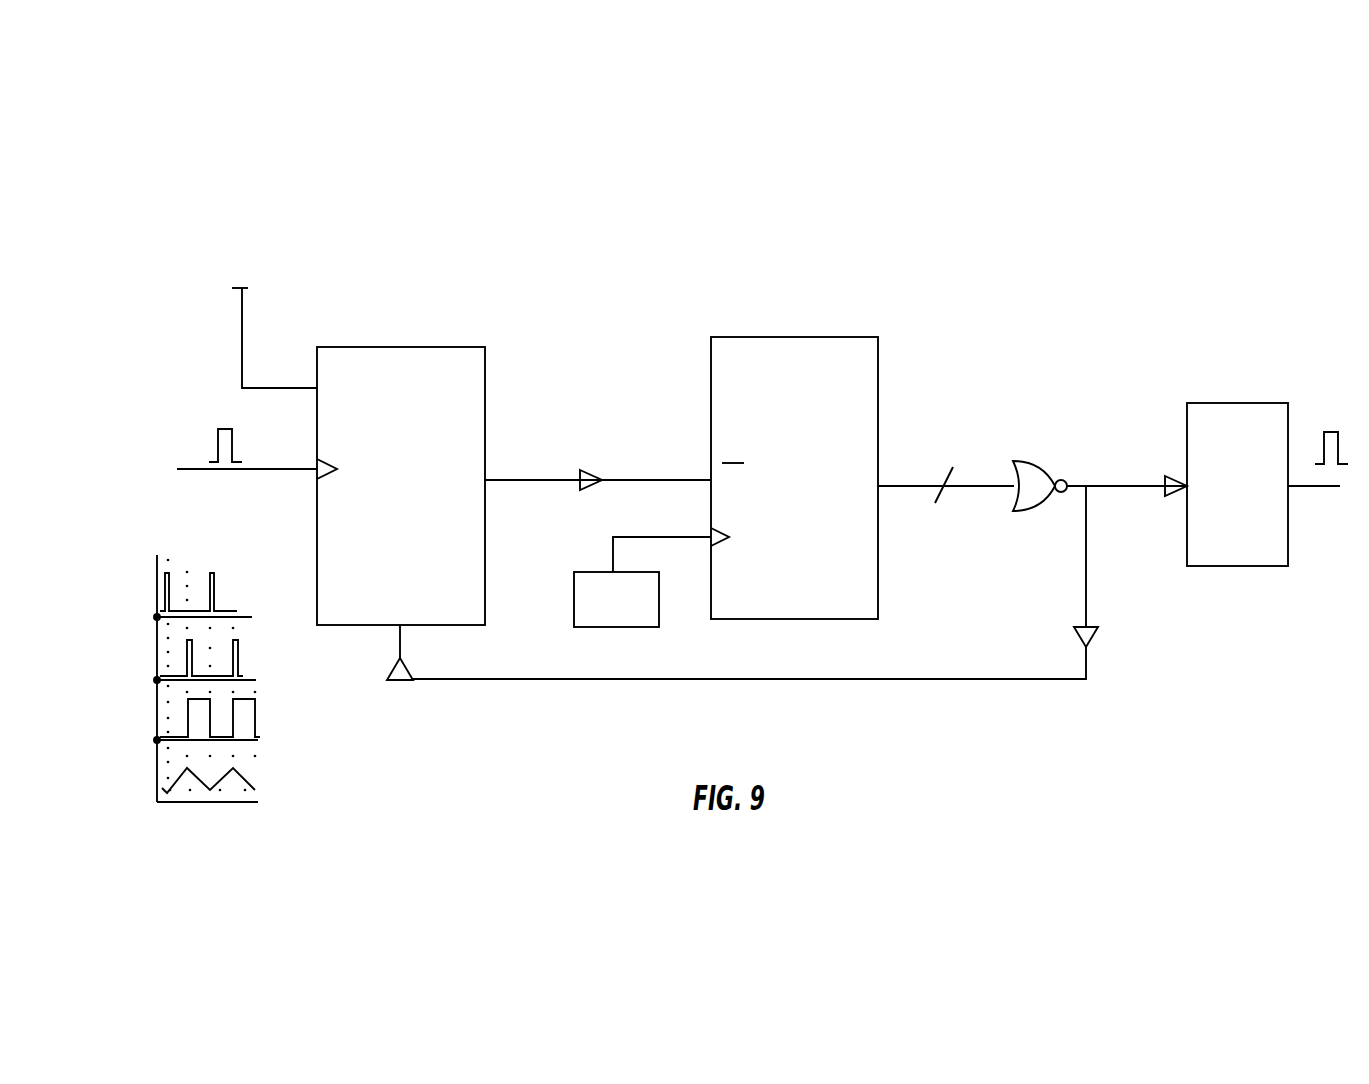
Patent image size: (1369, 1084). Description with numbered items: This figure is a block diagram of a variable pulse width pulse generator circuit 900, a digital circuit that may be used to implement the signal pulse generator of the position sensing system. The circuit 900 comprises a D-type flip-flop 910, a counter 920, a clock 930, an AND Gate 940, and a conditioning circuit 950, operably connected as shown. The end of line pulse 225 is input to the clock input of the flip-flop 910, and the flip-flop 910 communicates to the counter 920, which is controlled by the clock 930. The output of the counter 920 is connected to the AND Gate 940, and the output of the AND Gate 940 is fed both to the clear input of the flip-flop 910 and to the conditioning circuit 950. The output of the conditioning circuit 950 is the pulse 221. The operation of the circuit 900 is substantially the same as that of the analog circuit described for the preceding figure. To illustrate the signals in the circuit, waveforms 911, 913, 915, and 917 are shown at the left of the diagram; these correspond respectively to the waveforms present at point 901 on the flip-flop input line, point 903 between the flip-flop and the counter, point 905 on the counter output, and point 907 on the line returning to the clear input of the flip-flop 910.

The variable pulse width pulse generator circuit 900 is at (359, 232).
The D-type flip-flop 910 is at (438, 370).
The counter 920 is at (858, 360).
The clock 930 is at (604, 621).
The AND Gate 940 is at (1030, 497).
The conditioning circuit 950 is at (1272, 408).
The pulse 221 is at (1328, 422).
The end of line pulse 225 is at (212, 427).
The point 901 is at (299, 510).
The point 903 is at (674, 466).
The point 905 is at (944, 459).
The point 907 is at (1009, 669).
The waveform 911 is at (126, 660).
The waveform 913 is at (126, 720).
The waveform 915 is at (126, 780).
The waveform 917 is at (126, 600).